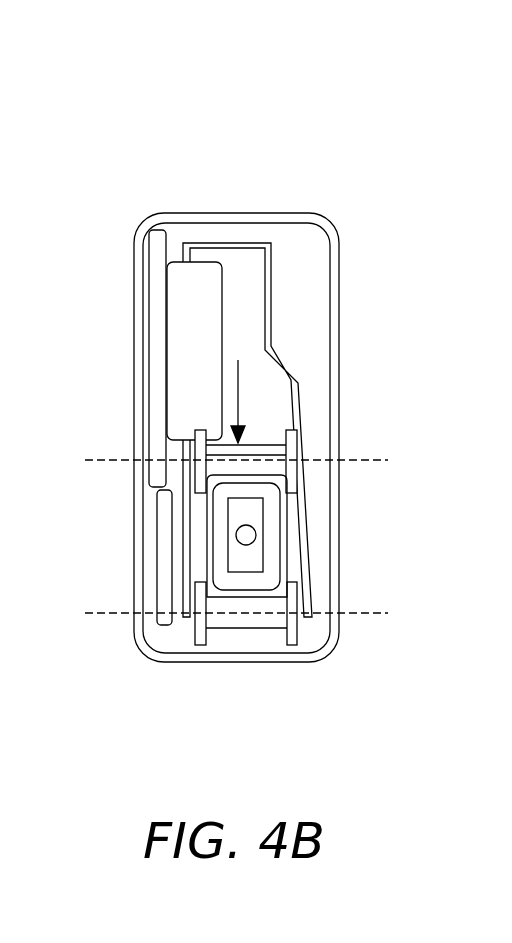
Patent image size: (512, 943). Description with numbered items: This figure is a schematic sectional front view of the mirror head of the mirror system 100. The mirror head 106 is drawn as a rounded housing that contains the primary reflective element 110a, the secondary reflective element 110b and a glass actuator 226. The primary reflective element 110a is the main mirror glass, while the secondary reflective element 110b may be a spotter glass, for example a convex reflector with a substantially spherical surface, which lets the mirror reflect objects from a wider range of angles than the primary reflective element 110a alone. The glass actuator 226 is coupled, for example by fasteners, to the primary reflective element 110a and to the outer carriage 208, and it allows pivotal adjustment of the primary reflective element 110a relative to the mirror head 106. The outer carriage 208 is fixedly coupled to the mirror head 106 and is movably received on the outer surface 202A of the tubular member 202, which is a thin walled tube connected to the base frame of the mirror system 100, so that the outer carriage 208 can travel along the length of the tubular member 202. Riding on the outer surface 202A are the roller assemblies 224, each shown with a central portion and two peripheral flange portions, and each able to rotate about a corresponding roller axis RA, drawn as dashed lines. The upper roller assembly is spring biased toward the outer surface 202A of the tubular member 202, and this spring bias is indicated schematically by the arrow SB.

The mirror system 100 is at (270, 51).
The mirror head 106 is at (273, 213).
The primary reflective element 110a is at (148, 407).
The secondary reflective element 110b is at (150, 534).
The glass actuator 226 is at (195, 283).
The outer carriage 208 is at (273, 292).
The spring bias SB is at (240, 397).
The roller assemblies 224 is at (253, 443).
The roller axis RA is at (353, 460).
The tubular member 202 is at (306, 529).
The outer surface 202A is at (294, 536).